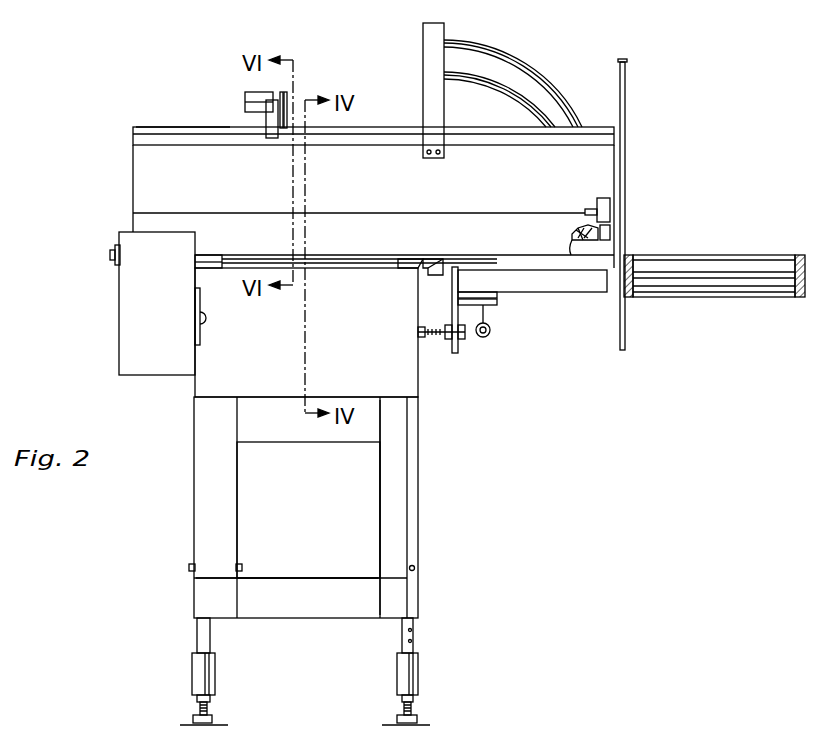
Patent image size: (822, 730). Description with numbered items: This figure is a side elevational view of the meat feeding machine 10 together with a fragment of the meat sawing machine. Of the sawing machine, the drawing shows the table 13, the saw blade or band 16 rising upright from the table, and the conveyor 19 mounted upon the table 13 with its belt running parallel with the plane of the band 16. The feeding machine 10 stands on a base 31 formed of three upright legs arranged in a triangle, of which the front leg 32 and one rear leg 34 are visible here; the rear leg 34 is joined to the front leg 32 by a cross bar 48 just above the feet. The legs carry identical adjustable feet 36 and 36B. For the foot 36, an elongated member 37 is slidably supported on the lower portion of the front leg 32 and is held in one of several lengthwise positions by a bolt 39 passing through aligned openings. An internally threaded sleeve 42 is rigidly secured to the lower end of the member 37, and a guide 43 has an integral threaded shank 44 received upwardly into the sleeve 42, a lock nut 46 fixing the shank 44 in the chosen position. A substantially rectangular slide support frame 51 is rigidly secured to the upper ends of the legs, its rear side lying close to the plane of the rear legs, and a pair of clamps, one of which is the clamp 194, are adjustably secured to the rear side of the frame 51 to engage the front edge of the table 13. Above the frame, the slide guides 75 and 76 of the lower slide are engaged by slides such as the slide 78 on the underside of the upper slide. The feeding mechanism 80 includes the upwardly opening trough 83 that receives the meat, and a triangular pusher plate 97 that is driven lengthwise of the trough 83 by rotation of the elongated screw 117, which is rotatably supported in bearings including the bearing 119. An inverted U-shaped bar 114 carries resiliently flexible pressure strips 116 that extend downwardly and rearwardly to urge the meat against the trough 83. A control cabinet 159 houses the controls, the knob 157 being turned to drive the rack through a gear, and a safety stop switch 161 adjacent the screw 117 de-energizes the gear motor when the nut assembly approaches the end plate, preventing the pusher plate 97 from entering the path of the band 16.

The feeding machine 10 is at (122, 71).
The table 13 is at (545, 285).
The saw blade or band 16 is at (631, 102).
The conveyor 19 is at (712, 250).
The base 31 is at (162, 468).
The front leg 32 is at (228, 495).
The rear leg 34 is at (392, 514).
The adjustable foot 36 is at (182, 715).
The adjustable foot 36B is at (396, 716).
The elongated member 37 is at (203, 633).
The bolt 39 is at (189, 568).
The internally threaded sleeve 42 is at (199, 668).
The guide 43 is at (212, 718).
The threaded shank 44 is at (210, 710).
The lock nut 46 is at (198, 697).
The cross bar 48 is at (295, 590).
The slide support frame 51 is at (428, 376).
The slide guide 75 is at (208, 262).
The slide guide 76 is at (398, 263).
The slide 78 is at (435, 265).
The feeding mechanism 80 is at (401, 122).
The trough 83 is at (208, 127).
The pusher plate 97 is at (266, 118).
The U-shaped bar 114 is at (423, 45).
The pressure strip 116 is at (508, 88).
The screw 117 is at (578, 226).
The bearing 119 is at (584, 226).
The knob 157 is at (108, 254).
The control cabinet 159 is at (110, 313).
The safety stop switch 161 is at (603, 212).
The clamp 194 is at (490, 330).